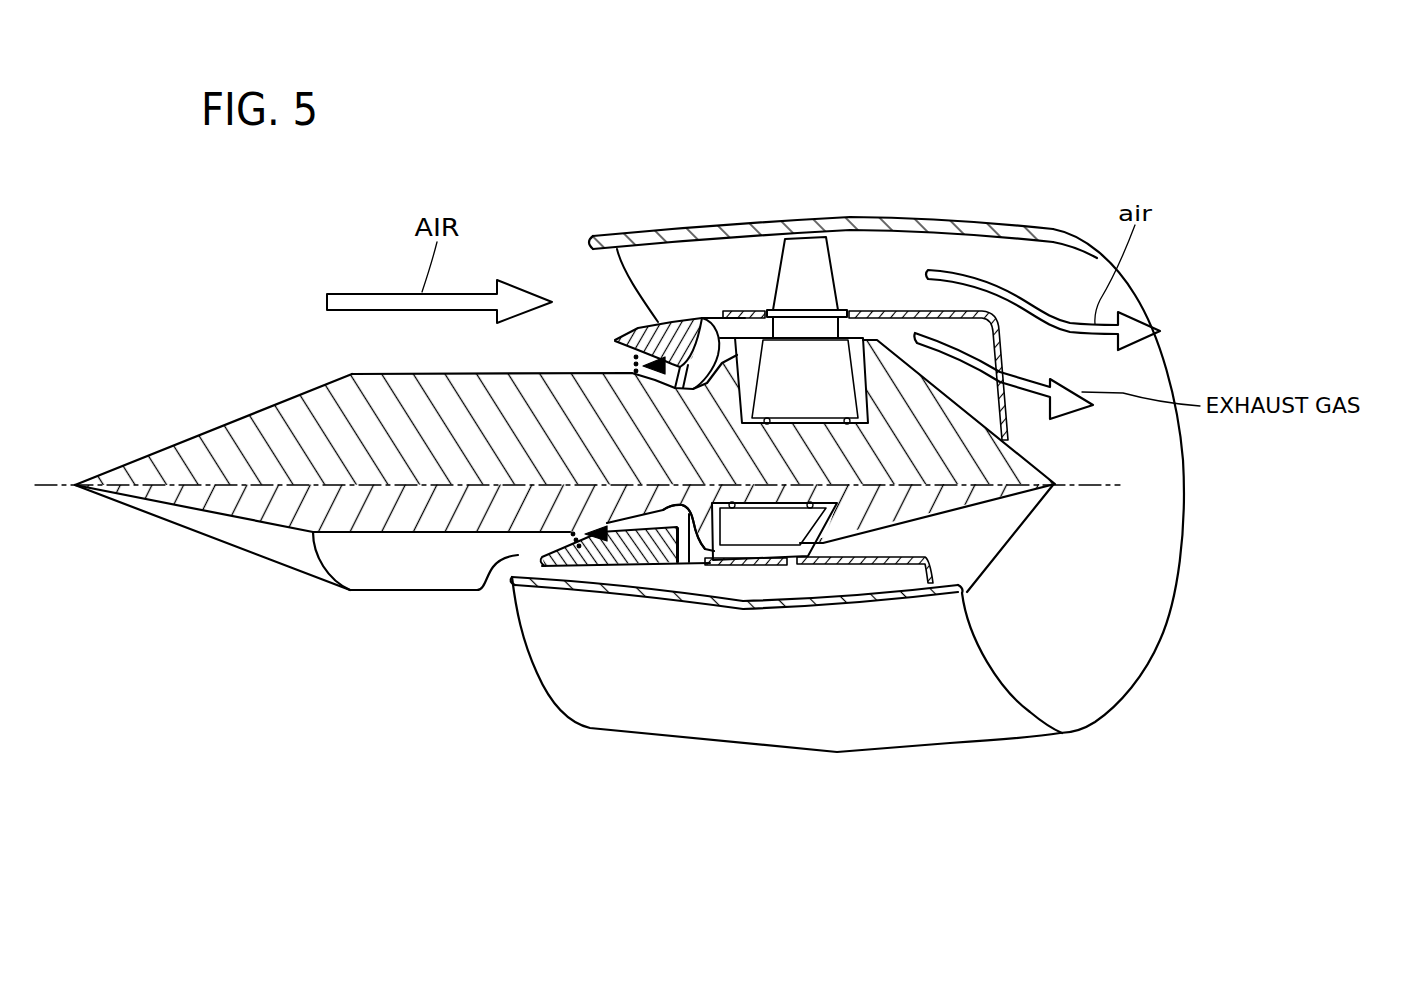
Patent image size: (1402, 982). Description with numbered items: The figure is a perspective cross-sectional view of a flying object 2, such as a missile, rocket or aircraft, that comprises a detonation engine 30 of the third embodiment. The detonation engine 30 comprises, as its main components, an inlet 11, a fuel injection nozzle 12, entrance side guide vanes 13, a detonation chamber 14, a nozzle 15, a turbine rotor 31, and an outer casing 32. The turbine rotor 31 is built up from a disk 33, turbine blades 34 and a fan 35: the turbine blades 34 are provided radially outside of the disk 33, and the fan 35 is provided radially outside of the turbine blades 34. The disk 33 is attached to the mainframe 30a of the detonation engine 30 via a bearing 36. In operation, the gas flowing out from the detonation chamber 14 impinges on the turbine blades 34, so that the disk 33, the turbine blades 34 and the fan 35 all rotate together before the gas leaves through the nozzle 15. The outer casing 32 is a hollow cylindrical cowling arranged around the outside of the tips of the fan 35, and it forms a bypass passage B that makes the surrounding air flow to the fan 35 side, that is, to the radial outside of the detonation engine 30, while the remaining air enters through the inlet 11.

The flying object 2 is at (304, 352).
The inlet 11 is at (615, 362).
The fuel injection nozzle 12 is at (680, 320).
The entrance side guide vanes 13 is at (700, 367).
The detonation chamber 14 is at (720, 340).
The nozzle 15 is at (983, 342).
The detonation engine 30 is at (872, 172).
The mainframe 30a is at (830, 462).
The turbine rotor 31 is at (888, 236).
The outer casing 32 is at (1029, 226).
The disk 33 is at (842, 363).
The turbine blades 34 is at (823, 323).
The fan 35 is at (808, 257).
The bearing 36 is at (845, 426).
The bypass passage B is at (642, 258).